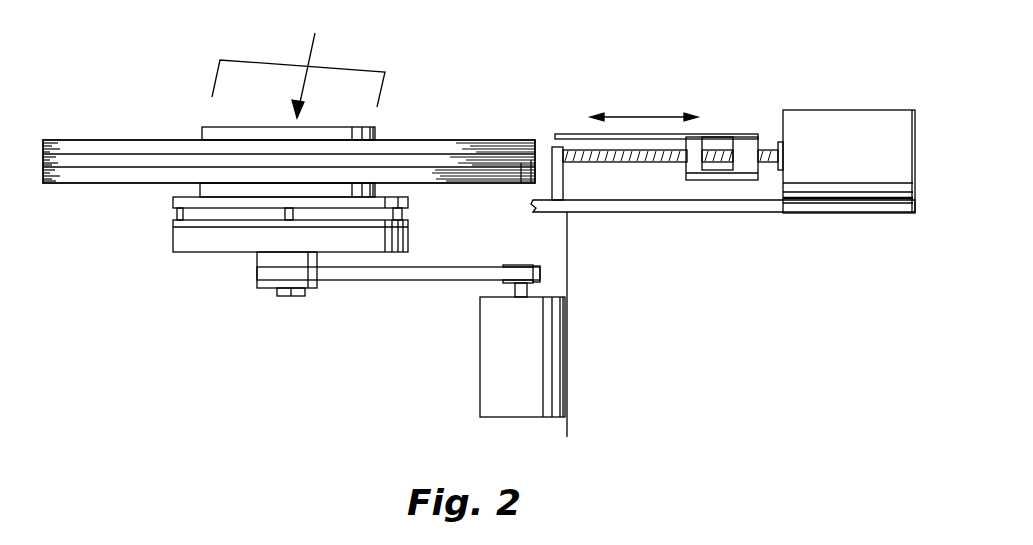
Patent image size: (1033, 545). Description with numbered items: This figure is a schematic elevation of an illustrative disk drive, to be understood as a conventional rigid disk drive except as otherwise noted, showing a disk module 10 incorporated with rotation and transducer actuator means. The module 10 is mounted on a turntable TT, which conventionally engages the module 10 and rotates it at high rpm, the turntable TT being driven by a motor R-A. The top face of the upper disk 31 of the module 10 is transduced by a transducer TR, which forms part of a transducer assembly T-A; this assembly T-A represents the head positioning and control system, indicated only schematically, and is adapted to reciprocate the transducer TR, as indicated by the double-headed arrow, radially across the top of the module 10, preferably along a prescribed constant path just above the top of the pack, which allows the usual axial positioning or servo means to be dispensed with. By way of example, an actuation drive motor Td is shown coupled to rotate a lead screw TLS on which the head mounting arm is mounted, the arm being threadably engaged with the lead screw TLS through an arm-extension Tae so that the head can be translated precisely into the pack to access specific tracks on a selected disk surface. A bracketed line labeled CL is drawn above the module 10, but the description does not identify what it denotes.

The disk module 10 is at (125, 110).
The upper disk 31 is at (431, 138).
The center line CL is at (340, 63).
The transducer TR is at (553, 133).
The transducer assembly T-A is at (722, 143).
The lead screw TLS is at (651, 163).
The arm-extension Tae is at (733, 182).
The actuation drive motor Td is at (880, 185).
The turntable TT is at (170, 202).
The motor R-A is at (478, 286).